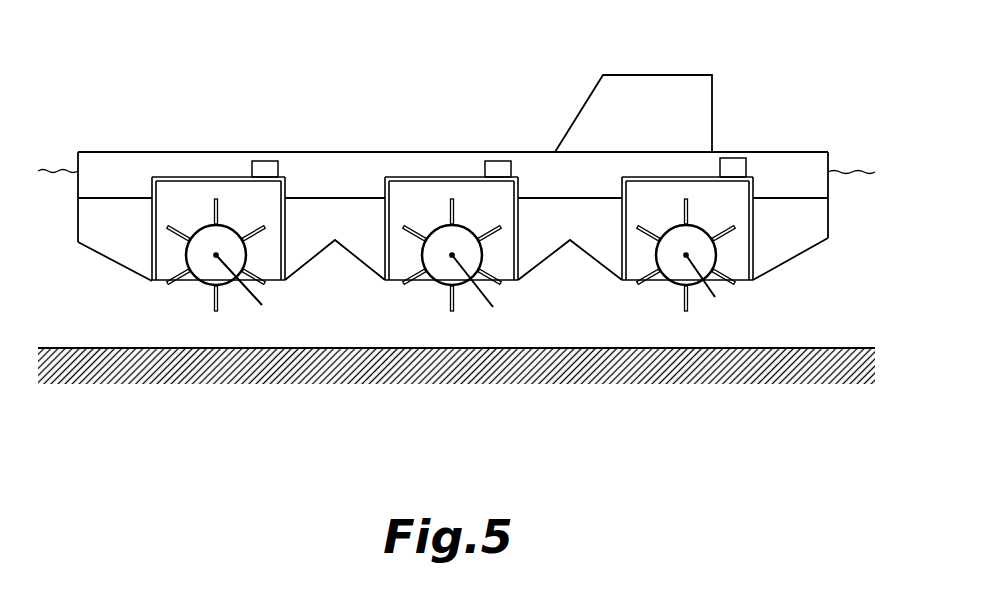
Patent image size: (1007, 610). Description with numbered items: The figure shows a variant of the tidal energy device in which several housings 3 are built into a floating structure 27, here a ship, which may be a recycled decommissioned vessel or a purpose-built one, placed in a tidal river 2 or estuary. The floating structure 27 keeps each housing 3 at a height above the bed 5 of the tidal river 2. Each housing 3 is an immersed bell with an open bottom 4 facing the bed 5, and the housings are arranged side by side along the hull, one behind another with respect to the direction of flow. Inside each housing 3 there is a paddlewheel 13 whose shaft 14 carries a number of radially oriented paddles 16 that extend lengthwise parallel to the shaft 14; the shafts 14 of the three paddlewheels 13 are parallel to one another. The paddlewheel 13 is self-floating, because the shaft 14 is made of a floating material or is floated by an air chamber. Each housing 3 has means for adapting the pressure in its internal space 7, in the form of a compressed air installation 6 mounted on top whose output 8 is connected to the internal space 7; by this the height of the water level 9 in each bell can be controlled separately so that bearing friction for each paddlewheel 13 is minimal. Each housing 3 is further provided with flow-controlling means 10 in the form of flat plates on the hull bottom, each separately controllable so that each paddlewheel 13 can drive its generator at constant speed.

The tidal river 2 is at (47, 233).
The floating structure 27 is at (118, 152).
The means for controlling the flow 10 is at (112, 262).
The internal space 7 is at (165, 188).
The housing 3 is at (192, 177).
The compressed air installation 6 is at (264, 161).
The output 8 is at (262, 177).
The paddlewheel 13 is at (223, 238).
The shaft 14 is at (476, 291).
The paddles 16 is at (180, 233).
The open bottom 4 is at (187, 282).
The water level 9 is at (242, 282).
The bed 5 is at (722, 381).